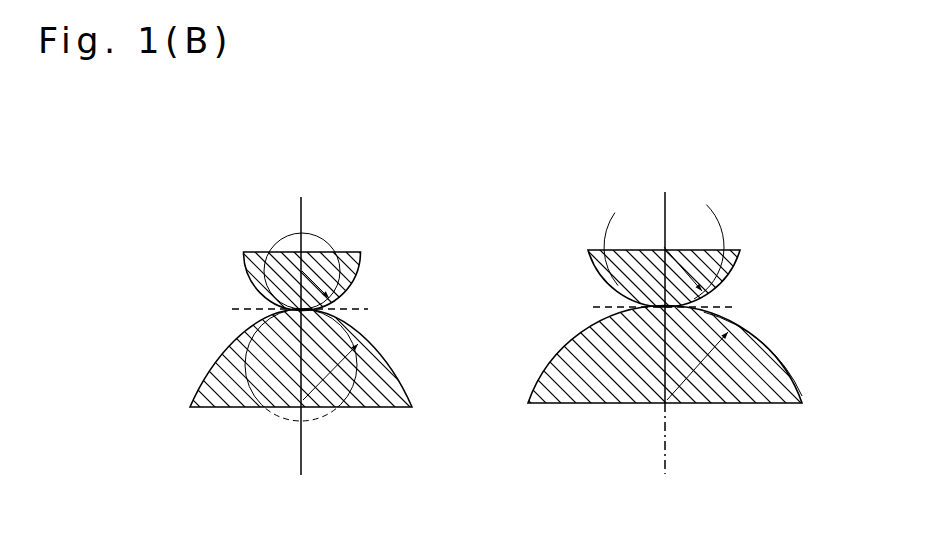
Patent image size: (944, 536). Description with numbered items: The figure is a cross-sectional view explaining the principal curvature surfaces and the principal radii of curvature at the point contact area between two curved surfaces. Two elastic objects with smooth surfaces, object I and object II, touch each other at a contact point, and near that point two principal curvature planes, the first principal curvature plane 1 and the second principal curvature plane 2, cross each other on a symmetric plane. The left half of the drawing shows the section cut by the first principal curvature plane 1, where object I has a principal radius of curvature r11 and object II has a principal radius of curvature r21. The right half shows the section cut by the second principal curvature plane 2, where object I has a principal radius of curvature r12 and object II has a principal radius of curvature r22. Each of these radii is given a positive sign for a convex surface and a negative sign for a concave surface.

The first principal curvature plane 1 is at (358, 208).
The second principal curvature plane 2 is at (720, 203).
The object I is at (346, 290).
The object II is at (362, 407).
The principal radius of curvature of object I in the first principal curvature plane r11 is at (333, 252).
The principal radius of curvature of object II in the first principal curvature plan r21 is at (327, 407).
The principal radius of curvature of object I in the second principal curvature plan r12 is at (692, 250).
The principal radius of curvature of object II in the second principal curvature pla r22 is at (730, 337).